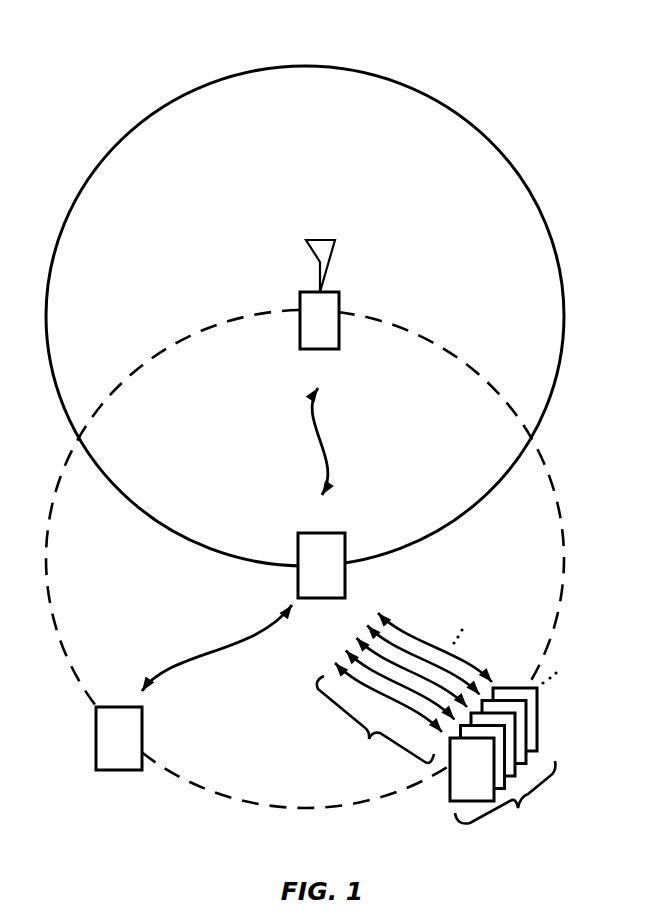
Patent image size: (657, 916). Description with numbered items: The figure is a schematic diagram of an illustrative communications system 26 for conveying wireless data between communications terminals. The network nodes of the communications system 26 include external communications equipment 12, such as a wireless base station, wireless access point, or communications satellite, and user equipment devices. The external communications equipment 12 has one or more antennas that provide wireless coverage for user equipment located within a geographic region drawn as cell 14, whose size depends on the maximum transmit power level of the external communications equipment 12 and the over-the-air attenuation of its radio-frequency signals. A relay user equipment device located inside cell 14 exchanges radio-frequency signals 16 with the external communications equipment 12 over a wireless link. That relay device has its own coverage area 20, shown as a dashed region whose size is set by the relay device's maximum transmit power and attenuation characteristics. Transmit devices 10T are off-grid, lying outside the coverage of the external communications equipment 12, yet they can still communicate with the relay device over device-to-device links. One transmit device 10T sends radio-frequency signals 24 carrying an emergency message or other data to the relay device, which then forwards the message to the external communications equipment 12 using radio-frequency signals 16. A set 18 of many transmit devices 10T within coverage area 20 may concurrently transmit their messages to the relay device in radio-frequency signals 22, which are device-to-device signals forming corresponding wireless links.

The cell 14 is at (307, 67).
The external communications equipment 12 is at (340, 303).
The radio-frequency signals 16 is at (326, 442).
The coverage area 20 is at (566, 530).
The radio-frequency signals 24 is at (223, 653).
The radio-frequency signals 22 is at (404, 689).
The set of transmit devices 18 is at (504, 751).
The transmit device 10T is at (96, 742).
The communications system 26 is at (556, 141).